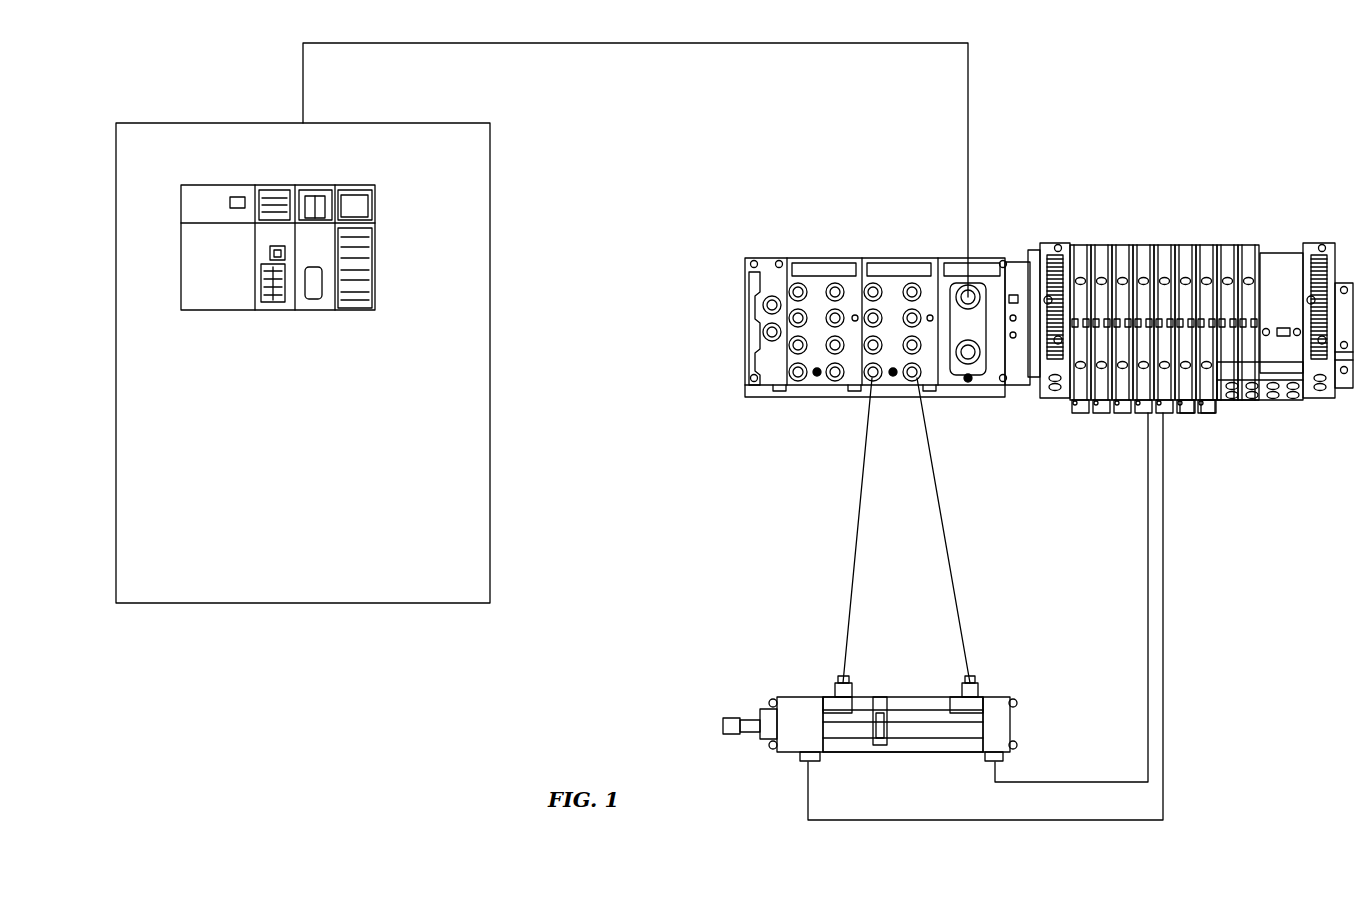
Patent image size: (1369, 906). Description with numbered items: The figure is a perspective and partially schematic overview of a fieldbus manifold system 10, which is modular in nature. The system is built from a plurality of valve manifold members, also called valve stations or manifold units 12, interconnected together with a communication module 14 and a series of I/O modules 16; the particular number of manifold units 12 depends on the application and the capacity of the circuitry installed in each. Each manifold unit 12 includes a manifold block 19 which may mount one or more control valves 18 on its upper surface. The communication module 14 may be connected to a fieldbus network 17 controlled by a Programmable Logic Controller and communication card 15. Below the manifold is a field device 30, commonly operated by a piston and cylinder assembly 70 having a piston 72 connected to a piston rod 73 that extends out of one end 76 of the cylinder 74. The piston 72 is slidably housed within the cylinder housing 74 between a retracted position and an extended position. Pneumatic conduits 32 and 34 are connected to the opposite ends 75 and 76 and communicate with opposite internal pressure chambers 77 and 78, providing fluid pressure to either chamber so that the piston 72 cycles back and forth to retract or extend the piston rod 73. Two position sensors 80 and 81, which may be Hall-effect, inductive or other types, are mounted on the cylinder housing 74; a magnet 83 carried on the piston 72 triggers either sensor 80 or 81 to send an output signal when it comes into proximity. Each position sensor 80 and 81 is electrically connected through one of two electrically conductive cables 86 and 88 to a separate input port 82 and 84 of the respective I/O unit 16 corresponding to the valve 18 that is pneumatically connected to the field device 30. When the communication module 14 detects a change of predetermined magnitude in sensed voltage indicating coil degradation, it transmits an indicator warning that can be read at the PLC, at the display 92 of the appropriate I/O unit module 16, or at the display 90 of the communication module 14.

The fieldbus manifold system 10 is at (1049, 290).
The manifold units 12 is at (1168, 246).
The communication module 14 is at (977, 327).
The Programmable Logic Controller and communication card 15 is at (470, 246).
The I/O modules 16 is at (818, 393).
The fieldbus network 17 is at (825, 43).
The control valves 18 is at (1208, 415).
The manifold block 19 is at (1283, 402).
The field device 30 is at (896, 694).
The pneumatic conduit 32 is at (1147, 550).
The pneumatic conduit 34 is at (1164, 578).
The piston and cylinder assembly 70 is at (1009, 697).
The piston 72 is at (882, 732).
The piston rod 73 is at (735, 724).
The cylinder housing 74 is at (902, 754).
The cylinder end 75 is at (1016, 750).
The cylinder end 76 is at (790, 740).
The internal pressure chamber 77 is at (814, 752).
The internal pressure chamber 78 is at (935, 735).
The position sensor 80 is at (840, 684).
The position sensor 81 is at (966, 684).
The input port 82 is at (838, 366).
The magnet 83 is at (886, 690).
The input port 84 is at (922, 374).
The electrically conductive cable 86 is at (857, 540).
The electrically conductive cable 88 is at (937, 490).
The display 90 is at (950, 262).
The display 92 is at (879, 262).